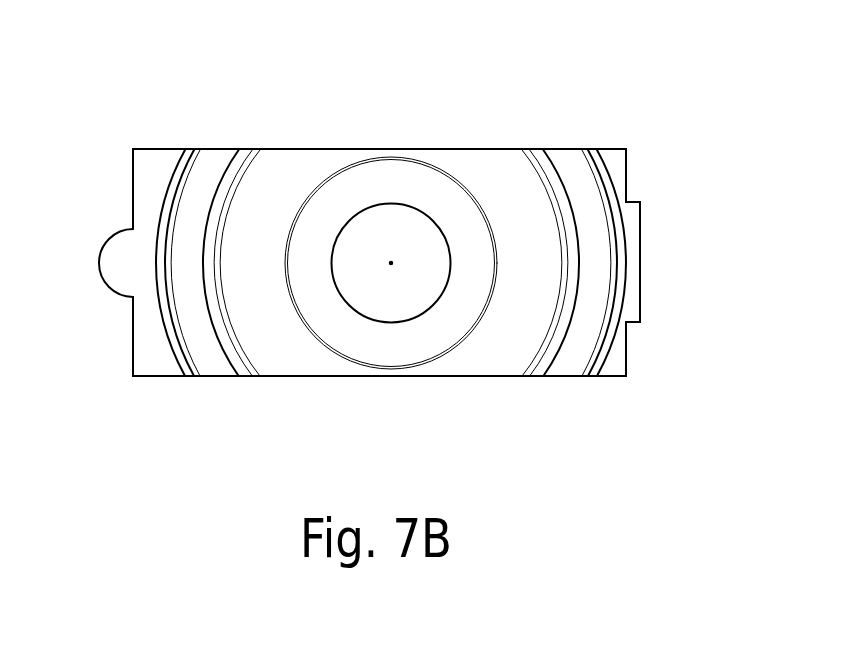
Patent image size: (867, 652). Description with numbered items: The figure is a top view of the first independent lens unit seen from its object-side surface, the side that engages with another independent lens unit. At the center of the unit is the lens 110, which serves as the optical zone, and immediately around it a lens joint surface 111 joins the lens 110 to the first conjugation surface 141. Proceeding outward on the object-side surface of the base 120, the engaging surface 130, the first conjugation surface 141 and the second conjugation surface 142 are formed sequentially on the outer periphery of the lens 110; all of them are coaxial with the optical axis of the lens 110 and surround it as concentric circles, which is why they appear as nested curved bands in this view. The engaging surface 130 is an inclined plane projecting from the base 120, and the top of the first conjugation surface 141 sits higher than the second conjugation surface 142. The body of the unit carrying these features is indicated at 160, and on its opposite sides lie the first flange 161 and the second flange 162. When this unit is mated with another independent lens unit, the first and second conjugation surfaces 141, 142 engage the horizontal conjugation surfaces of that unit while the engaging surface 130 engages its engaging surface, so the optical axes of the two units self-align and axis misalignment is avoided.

The lens 110 is at (376, 290).
The lens joint surface 111 is at (443, 343).
The base 120 is at (228, 130).
The engaging surface 130 is at (543, 358).
The first conjugation surface 141 is at (291, 343).
The second conjugation surface 142 is at (573, 343).
The housing 160 is at (160, 367).
The first flange 161 is at (116, 262).
The second flange 162 is at (634, 261).